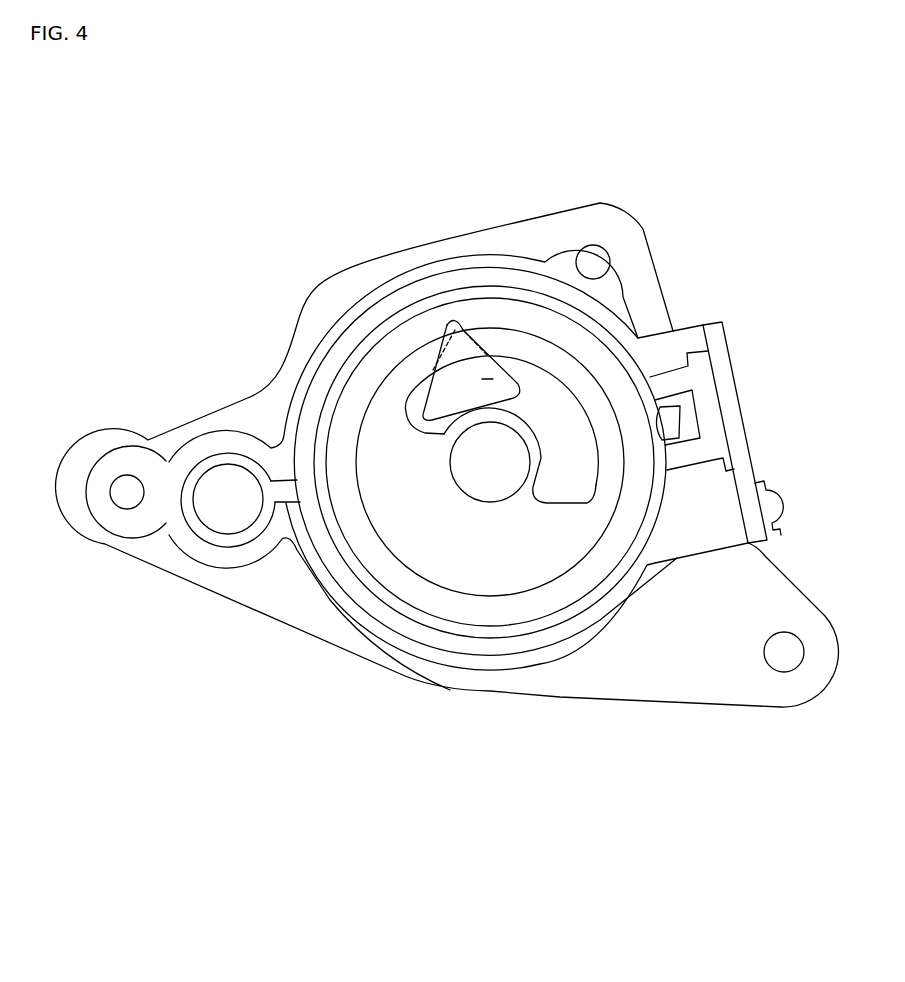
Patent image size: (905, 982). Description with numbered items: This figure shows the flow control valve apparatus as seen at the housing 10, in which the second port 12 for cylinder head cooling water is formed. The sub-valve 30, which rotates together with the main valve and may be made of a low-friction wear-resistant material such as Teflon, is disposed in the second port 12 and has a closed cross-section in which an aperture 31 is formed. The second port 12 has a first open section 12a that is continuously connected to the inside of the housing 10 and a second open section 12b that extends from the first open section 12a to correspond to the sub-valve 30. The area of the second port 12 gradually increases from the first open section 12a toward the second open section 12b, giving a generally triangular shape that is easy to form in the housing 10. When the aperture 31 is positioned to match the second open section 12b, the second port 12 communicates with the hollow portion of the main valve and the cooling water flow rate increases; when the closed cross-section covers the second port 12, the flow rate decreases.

The housing 10 is at (624, 718).
The second port 12 is at (497, 253).
The first open section 12a is at (449, 318).
The second open section 12b is at (487, 378).
The sub-valve 30 is at (452, 558).
The aperture 31 is at (417, 382).